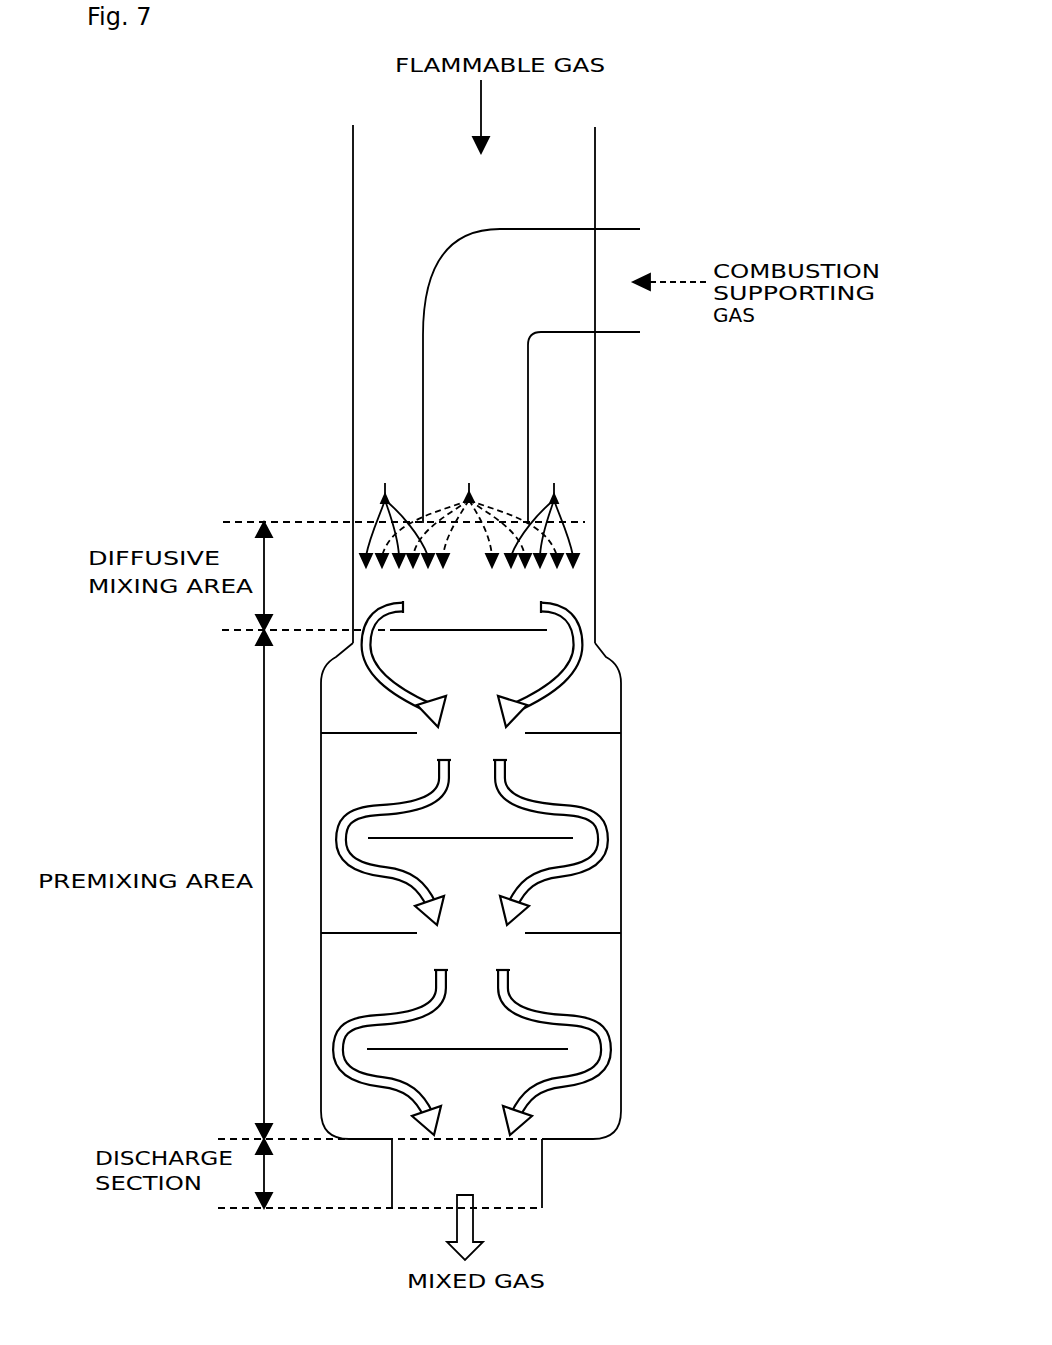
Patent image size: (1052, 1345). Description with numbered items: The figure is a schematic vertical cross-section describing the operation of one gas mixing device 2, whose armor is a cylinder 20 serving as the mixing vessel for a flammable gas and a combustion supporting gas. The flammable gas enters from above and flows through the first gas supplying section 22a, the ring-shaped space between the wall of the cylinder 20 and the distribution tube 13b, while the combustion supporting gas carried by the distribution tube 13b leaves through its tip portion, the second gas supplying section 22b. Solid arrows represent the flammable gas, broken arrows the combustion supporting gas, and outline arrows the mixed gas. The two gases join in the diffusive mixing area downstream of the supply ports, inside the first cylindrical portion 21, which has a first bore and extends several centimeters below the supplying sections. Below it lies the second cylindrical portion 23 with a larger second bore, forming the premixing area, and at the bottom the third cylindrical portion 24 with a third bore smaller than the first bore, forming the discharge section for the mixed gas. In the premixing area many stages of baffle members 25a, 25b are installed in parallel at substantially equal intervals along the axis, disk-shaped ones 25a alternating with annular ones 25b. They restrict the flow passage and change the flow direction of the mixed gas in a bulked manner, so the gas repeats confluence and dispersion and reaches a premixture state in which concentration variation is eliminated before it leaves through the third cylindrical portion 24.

The gas mixing device 2 is at (232, 97).
The distribution tube 13b is at (535, 392).
The cylinder 20 is at (688, 543).
The first cylindrical portion 21 is at (595, 497).
The first gas supplying section 22a is at (385, 460).
The second gas supplying section 22b is at (447, 442).
The second cylindrical portion 23 is at (621, 888).
The third cylindrical portion 24 is at (542, 1175).
The disk-shaped baffle member 25a is at (498, 630).
The annular baffle member 25b is at (568, 733).